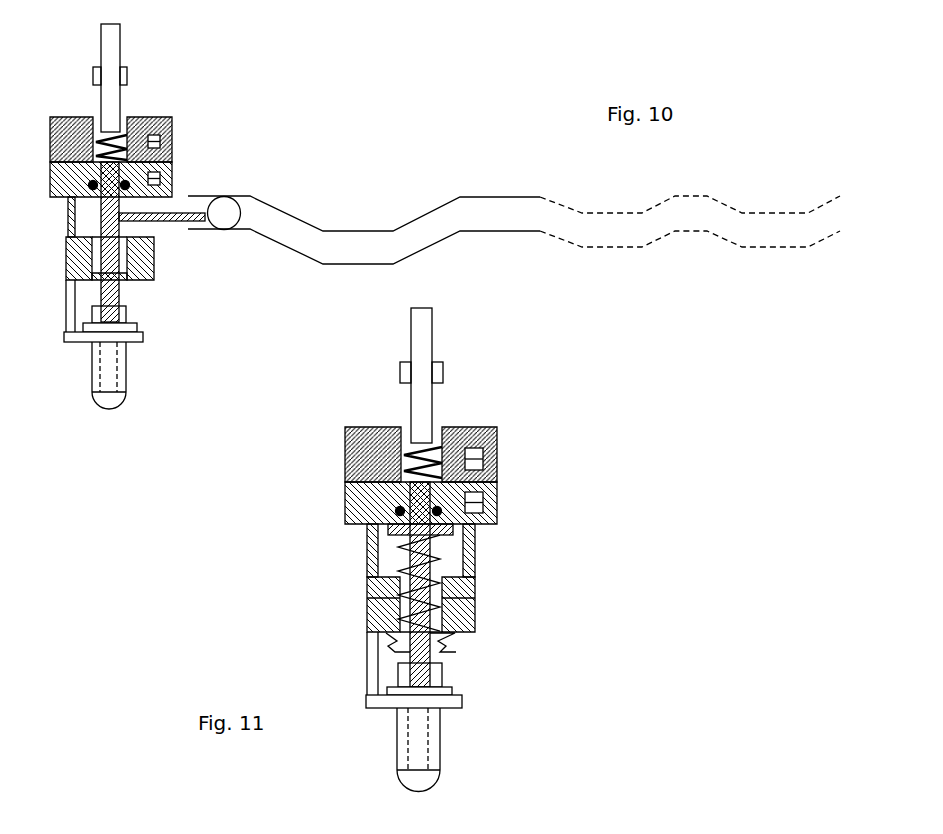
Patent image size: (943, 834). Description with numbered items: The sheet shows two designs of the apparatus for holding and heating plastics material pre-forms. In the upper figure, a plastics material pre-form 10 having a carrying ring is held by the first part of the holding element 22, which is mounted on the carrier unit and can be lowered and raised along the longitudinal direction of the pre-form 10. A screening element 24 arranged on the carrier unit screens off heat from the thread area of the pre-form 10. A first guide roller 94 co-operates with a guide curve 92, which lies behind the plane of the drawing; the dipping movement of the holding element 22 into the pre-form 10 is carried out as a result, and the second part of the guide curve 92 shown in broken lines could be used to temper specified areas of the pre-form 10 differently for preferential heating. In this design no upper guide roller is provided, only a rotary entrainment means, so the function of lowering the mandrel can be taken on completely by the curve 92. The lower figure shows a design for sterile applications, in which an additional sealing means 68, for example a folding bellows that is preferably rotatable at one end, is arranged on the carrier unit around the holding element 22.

In FIG. 10, the plastics material pre-form 10 is at (120, 368).
In FIG. 10, the holding element 22 is at (88, 215).
In FIG. 10, the screening element 24 is at (82, 335).
In FIG. 11, the sealing means 68 is at (448, 652).
In FIG. 10, the guide curve 92 is at (340, 247).
In FIG. 10, the first guide roller 94 is at (213, 217).